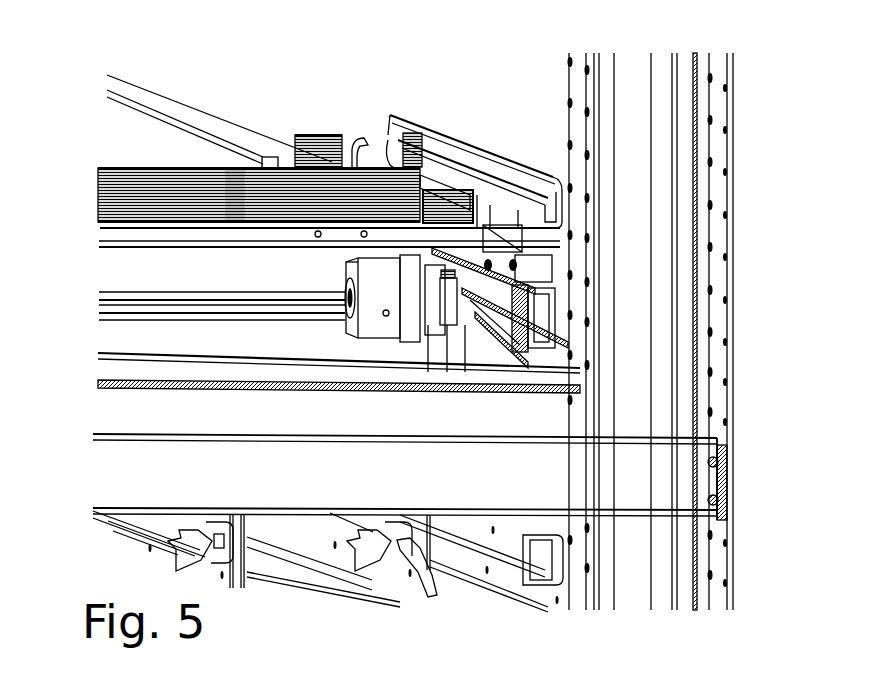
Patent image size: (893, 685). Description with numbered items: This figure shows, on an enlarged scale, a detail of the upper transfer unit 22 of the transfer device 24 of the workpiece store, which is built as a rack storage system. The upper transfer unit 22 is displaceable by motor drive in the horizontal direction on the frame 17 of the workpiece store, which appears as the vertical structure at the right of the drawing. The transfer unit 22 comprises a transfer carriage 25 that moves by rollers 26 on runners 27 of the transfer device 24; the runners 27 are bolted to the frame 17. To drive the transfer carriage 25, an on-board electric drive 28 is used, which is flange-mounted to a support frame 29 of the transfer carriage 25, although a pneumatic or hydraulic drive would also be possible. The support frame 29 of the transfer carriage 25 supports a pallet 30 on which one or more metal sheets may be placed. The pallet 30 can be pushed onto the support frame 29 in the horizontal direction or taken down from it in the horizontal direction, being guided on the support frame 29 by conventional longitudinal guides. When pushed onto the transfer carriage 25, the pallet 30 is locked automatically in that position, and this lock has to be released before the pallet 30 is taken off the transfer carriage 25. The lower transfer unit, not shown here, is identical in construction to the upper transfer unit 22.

The frame 17 is at (720, 188).
The upper transfer unit 22 is at (99, 157).
The transfer device 24 is at (97, 262).
The transfer carriage 25 is at (385, 106).
The rollers 26 is at (567, 320).
The runners 27 is at (567, 363).
The electric drive 28 is at (379, 323).
The support frame 29 is at (567, 277).
The pallet 30 is at (232, 168).